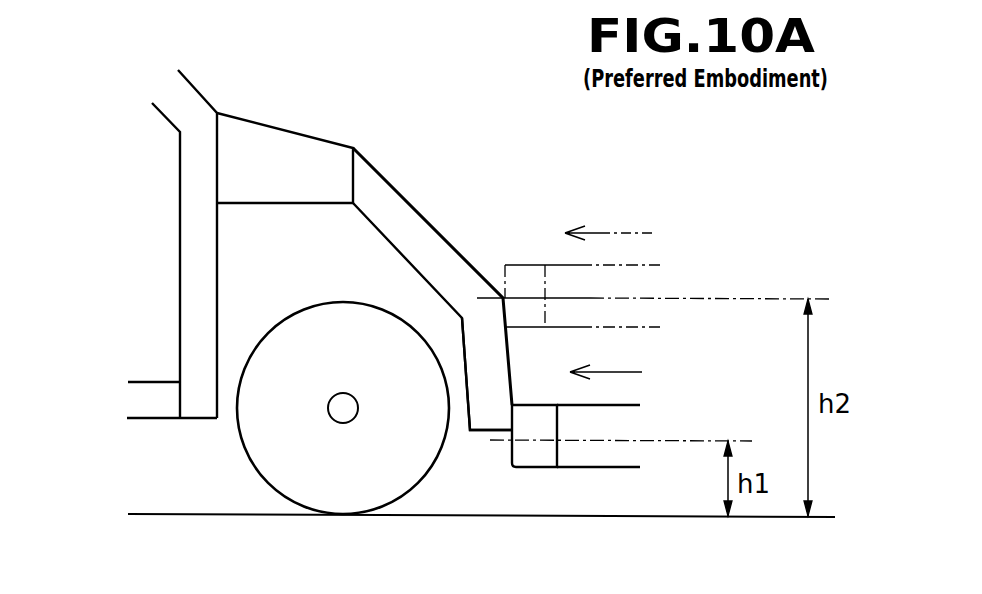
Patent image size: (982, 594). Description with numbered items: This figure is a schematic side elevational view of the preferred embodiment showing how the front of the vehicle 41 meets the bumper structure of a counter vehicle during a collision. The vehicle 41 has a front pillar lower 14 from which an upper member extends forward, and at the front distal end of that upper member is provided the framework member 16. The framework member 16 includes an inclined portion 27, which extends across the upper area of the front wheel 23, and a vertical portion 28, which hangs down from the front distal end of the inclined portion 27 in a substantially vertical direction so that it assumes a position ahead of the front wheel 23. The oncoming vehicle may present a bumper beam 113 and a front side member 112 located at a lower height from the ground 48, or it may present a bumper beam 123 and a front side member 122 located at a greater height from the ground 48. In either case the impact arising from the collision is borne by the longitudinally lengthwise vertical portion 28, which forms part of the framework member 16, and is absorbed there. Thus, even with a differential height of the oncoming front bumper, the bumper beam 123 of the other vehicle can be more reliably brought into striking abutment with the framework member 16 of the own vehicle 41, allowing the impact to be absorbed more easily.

The front pillar lower 14 is at (180, 253).
The framework member 16 is at (437, 200).
The front wheel 23 is at (297, 310).
The inclined portion 27 is at (376, 168).
The vertical portion 28 is at (465, 385).
The vehicle 41 is at (333, 119).
The ground 48 is at (152, 514).
The front side member 112 is at (610, 467).
The bumper beam 113 is at (530, 467).
The front side member 122 is at (643, 265).
The bumper beam 123 is at (525, 265).